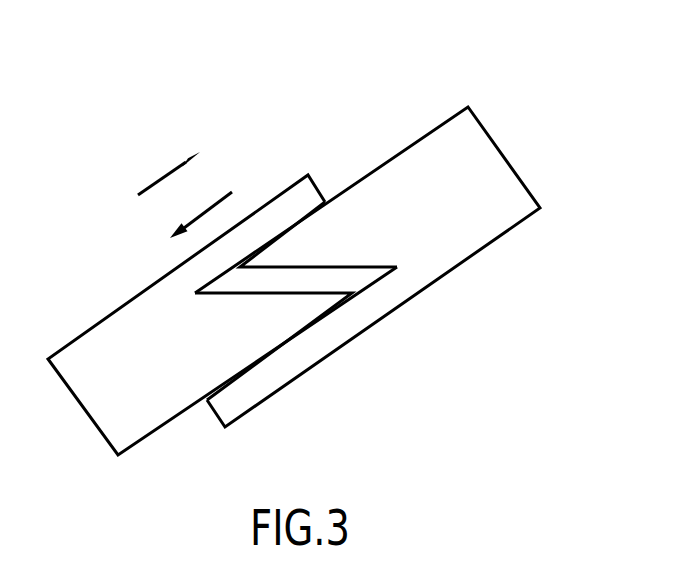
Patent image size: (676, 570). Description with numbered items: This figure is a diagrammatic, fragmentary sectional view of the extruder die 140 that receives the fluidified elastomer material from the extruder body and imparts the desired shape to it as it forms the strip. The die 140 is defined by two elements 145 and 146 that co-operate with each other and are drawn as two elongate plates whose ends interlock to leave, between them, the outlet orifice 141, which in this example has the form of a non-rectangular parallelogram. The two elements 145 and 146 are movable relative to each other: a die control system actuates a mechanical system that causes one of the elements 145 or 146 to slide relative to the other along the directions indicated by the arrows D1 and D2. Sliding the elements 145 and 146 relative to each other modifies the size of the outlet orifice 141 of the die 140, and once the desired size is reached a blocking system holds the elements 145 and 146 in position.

The extruder die 140 is at (392, 74).
The outlet orifice 141 is at (323, 277).
The element 145 is at (101, 408).
The element 146 is at (493, 170).
The direction D1 is at (201, 210).
The direction D2 is at (166, 173).